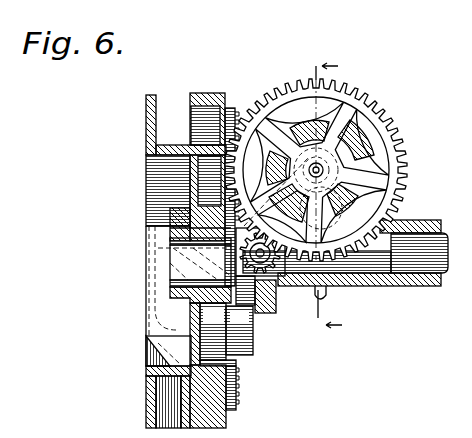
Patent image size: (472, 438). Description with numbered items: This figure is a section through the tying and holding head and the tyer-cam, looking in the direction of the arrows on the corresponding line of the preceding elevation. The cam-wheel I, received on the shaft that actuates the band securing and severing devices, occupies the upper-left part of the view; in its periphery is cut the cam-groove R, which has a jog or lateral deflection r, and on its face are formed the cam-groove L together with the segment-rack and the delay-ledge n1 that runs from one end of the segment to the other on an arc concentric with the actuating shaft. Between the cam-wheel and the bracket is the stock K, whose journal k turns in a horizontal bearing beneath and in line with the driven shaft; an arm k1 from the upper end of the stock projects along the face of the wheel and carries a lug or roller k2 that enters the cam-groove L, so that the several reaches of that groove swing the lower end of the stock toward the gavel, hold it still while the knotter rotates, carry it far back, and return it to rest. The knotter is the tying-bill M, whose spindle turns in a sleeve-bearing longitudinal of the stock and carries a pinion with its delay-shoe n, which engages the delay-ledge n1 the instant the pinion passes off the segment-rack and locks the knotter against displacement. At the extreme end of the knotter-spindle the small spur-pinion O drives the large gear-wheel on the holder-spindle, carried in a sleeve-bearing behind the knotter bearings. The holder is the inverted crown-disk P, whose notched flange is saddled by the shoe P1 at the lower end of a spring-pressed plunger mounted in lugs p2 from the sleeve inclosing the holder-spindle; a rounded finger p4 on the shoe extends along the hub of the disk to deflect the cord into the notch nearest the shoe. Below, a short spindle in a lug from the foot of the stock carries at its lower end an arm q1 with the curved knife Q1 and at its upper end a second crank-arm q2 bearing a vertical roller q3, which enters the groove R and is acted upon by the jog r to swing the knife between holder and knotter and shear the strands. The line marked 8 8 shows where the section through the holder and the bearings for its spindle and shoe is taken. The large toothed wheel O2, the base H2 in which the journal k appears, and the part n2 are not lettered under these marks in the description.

The cam-wheel I is at (186, 246).
The cam-groove R is at (195, 167).
The delay-ledge n1 is at (224, 100).
The vertical roller q3 is at (162, 238).
The second crank-arm q2 is at (166, 264).
The arm q1 is at (150, 212).
The delay-shoe n is at (223, 258).
The jog or lateral deflection r is at (138, 342).
The tying-bill M is at (260, 252).
The small spur-pinion O is at (268, 284).
The stock K is at (247, 300).
The lug or roller k2 is at (213, 331).
The arm k1 is at (239, 330).
The cam-groove L is at (231, 356).
The rack bar n2 is at (222, 406).
The rack bar base H2 is at (375, 278).
The journal k is at (414, 246).
The gear wheel O2 is at (396, 165).
The inverted crown-disk P is at (357, 141).
The rounded finger p4 is at (306, 135).
The lugs p2 is at (336, 200).
The shoe P1 is at (289, 203).
The curved knife Q1 is at (276, 188).
The section line 8 8 is at (326, 195).